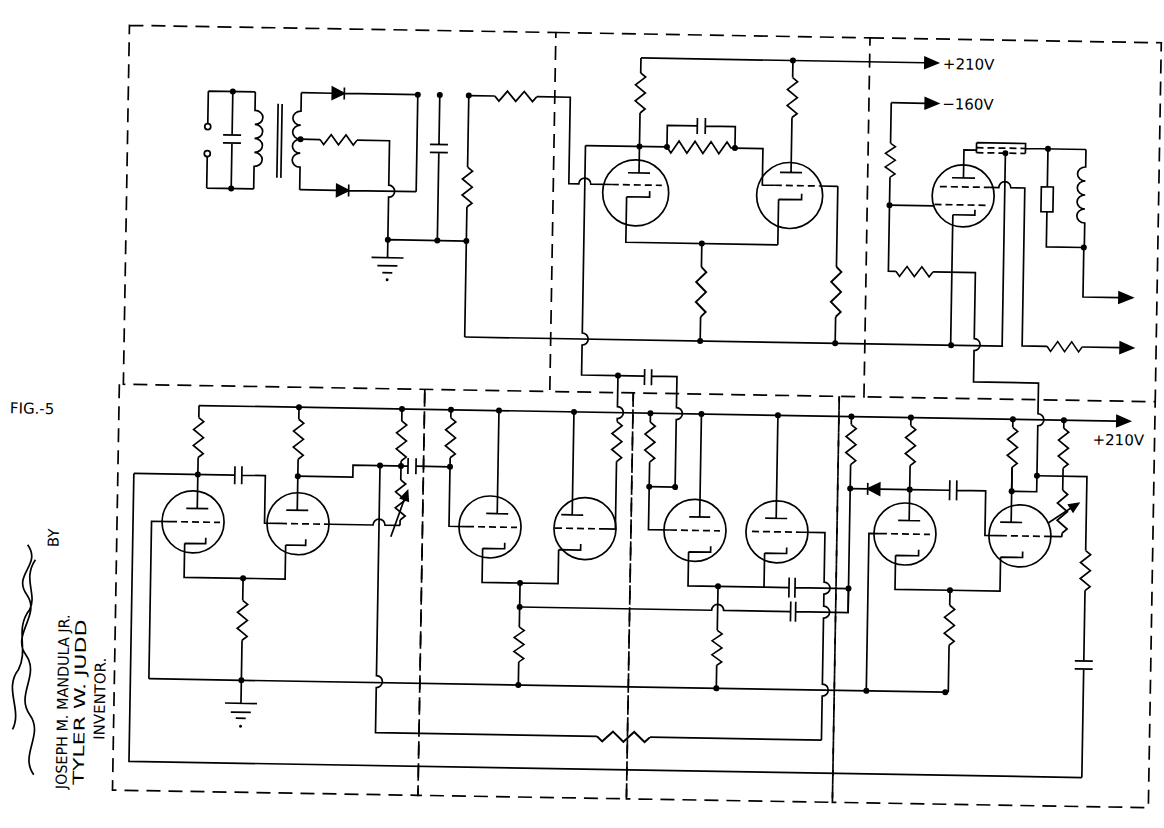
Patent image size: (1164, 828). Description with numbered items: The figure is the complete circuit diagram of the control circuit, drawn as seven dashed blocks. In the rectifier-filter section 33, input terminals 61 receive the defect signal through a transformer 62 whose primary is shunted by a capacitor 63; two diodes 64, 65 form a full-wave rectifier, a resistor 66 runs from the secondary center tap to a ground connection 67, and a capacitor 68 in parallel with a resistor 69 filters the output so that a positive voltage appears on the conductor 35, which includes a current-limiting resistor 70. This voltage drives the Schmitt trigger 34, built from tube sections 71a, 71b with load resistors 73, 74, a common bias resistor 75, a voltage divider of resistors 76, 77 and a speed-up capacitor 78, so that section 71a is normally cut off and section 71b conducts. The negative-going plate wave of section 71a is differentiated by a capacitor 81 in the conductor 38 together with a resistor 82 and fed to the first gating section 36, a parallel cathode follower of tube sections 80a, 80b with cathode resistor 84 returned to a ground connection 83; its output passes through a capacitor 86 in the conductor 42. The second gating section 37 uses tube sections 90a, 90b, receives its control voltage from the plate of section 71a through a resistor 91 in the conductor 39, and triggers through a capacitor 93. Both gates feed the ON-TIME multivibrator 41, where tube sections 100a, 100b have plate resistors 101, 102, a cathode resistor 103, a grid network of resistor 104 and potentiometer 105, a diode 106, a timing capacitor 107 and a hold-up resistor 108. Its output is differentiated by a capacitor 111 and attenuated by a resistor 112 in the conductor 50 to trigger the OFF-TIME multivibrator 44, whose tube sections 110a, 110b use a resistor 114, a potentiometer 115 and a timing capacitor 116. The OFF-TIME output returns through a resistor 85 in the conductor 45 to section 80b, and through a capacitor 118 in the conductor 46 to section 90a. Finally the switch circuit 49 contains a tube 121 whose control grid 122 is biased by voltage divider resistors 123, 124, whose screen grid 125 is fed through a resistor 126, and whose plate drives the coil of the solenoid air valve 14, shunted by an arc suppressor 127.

The solenoid air valve 14 is at (1089, 195).
The rectifier-filter section 33 is at (218, 316).
The Schmitt trigger 34 is at (592, 80).
The conductor 35 is at (483, 96).
The first gating section 36 is at (760, 764).
The second gating section 37 is at (553, 763).
The conductor 38 is at (584, 304).
The conductor 39 is at (617, 500).
The ON-TIME multivibrator 41 is at (995, 760).
The conductor 42 is at (800, 595).
The OFF-TIME multivibrator 44 is at (343, 759).
The conductor 45 is at (766, 736).
The conductor 46 is at (439, 474).
The switch circuit 49 is at (1117, 96).
The conductor 50 is at (182, 768).
The input terminals 61 is at (202, 148).
The transformer 62 is at (278, 110).
The capacitor 63 is at (235, 128).
The diode 64 is at (345, 94).
The diode 65 is at (344, 188).
The resistor 66 is at (353, 137).
The ground connection 67 is at (380, 264).
The capacitor 68 is at (452, 139).
The resistor 69 is at (466, 192).
The resistor 70 is at (521, 93).
The tube section 71a is at (613, 223).
The tube section 71b is at (803, 224).
The load resistor 73 is at (643, 100).
The load resistor 74 is at (795, 95).
The bias resistor 75 is at (706, 290).
The resistor 76 is at (708, 150).
The resistor 77 is at (830, 298).
The capacitor 78 is at (703, 121).
The tube section 80a is at (678, 558).
The tube section 80b is at (800, 507).
The capacitor 81 is at (651, 367).
The resistor 82 is at (668, 424).
The ground connection 83 is at (256, 705).
The resistor 84 is at (726, 650).
The resistor 85 is at (640, 734).
The capacitor 86 is at (797, 580).
The tube section 90a is at (470, 548).
The tube section 90b is at (598, 551).
The resistor 91 is at (618, 442).
The capacitor 93 is at (783, 620).
The tube section 100a is at (890, 558).
The tube section 100b is at (1024, 562).
The resistor 101 is at (915, 446).
The resistor 102 is at (1008, 451).
The resistor 103 is at (964, 648).
The resistor 104 is at (1078, 459).
The potentiometer 105 is at (1078, 512).
The diode 106 is at (876, 478).
The timing capacitor 107 is at (973, 468).
The resistor 108 is at (848, 449).
The tube section 110a is at (177, 556).
The tube section 110b is at (320, 556).
The capacitor 111 is at (1097, 660).
The resistor 112 is at (1092, 563).
The resistor 114 is at (399, 445).
The potentiometer 115 is at (404, 529).
The timing capacitor 116 is at (250, 449).
The capacitor 118 is at (416, 462).
The tube 121 is at (940, 172).
The control grid 122 is at (934, 204).
The voltage divider resistor 123 is at (896, 150).
The voltage divider resistor 124 is at (918, 271).
The screen grid 125 is at (1010, 165).
The resistor 126 is at (1066, 334).
The arc suppressor 127 is at (1068, 172).